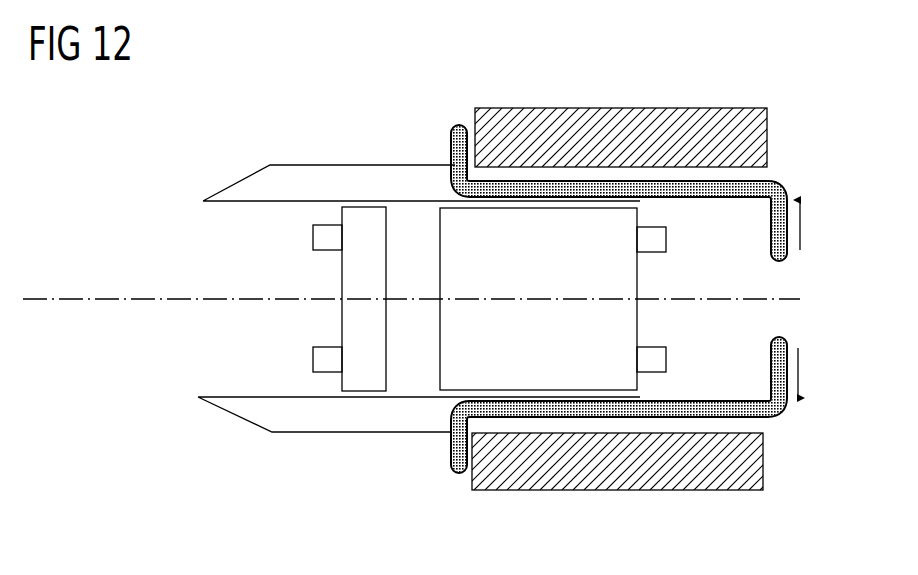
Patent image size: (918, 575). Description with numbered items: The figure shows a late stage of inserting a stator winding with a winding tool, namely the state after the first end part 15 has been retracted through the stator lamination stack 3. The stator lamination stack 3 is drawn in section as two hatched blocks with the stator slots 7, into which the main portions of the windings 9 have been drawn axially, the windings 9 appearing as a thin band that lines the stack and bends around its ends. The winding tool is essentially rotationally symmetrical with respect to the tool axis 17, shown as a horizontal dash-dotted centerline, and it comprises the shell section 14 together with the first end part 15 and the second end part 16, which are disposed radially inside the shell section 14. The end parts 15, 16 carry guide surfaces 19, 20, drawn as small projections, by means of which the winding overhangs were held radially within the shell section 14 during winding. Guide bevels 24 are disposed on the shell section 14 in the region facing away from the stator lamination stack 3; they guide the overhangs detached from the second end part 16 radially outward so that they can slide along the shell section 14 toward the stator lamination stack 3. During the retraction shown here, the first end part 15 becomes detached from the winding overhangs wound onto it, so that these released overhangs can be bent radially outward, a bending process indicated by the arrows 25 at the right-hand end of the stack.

The stator lamination stack 3 is at (665, 112).
The stator slots 7 is at (725, 175).
The windings 9 is at (572, 186).
The shell section 14 is at (383, 165).
The first end part 15 is at (515, 372).
The second end part 16 is at (350, 315).
The tool axis 17 is at (35, 298).
The guide surface 19 is at (652, 240).
The guide surface 20 is at (320, 236).
The guide bevels 24 is at (263, 163).
The arrows 25 is at (803, 222).